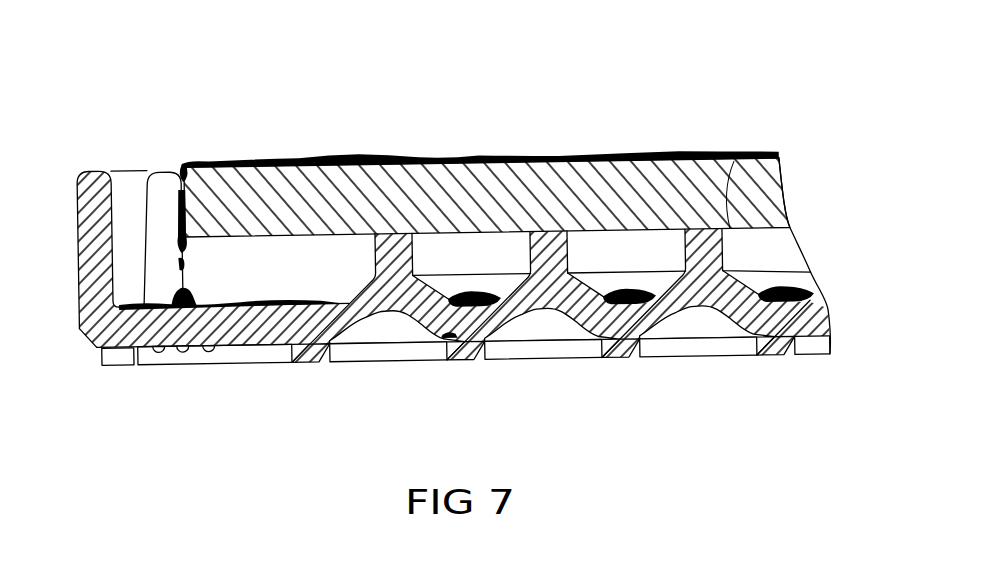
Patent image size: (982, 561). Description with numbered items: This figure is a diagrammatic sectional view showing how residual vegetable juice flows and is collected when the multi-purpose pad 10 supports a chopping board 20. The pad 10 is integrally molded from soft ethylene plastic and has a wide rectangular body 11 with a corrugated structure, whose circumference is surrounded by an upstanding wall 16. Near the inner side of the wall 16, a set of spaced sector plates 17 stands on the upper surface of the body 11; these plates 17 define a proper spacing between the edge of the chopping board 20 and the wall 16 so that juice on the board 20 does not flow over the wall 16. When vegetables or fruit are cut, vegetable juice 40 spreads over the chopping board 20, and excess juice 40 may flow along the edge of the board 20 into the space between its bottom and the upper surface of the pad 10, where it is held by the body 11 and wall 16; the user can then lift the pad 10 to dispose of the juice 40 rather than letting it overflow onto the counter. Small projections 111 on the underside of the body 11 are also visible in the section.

The multi-purpose pad 10 is at (826, 274).
The body 11 is at (268, 338).
The projections 111 is at (157, 356).
The upstanding wall 16 is at (93, 183).
The sector plates 17 is at (163, 183).
The chopping board 20 is at (723, 201).
The vegetable juice 40 is at (362, 161).